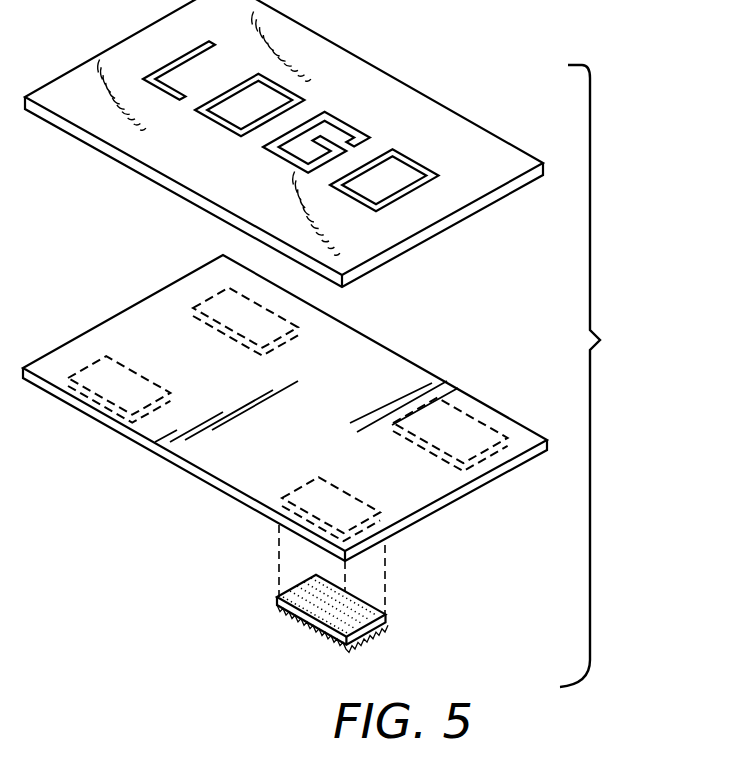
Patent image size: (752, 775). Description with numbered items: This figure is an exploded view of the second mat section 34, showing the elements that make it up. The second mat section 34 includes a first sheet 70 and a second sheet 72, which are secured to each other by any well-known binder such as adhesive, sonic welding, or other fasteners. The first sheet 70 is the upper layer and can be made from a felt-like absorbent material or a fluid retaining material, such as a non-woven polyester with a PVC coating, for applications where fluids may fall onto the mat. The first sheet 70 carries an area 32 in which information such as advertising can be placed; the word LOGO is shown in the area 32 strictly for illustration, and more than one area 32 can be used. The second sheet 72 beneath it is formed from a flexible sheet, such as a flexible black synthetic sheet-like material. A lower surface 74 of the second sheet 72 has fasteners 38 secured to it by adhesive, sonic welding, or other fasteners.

The first sheet 70 is at (383, 95).
The area 32 is at (456, 193).
The second mat section 34 is at (600, 340).
The second sheet 72 is at (433, 505).
The lower surface 74 is at (240, 500).
The fasteners 38 is at (303, 617).